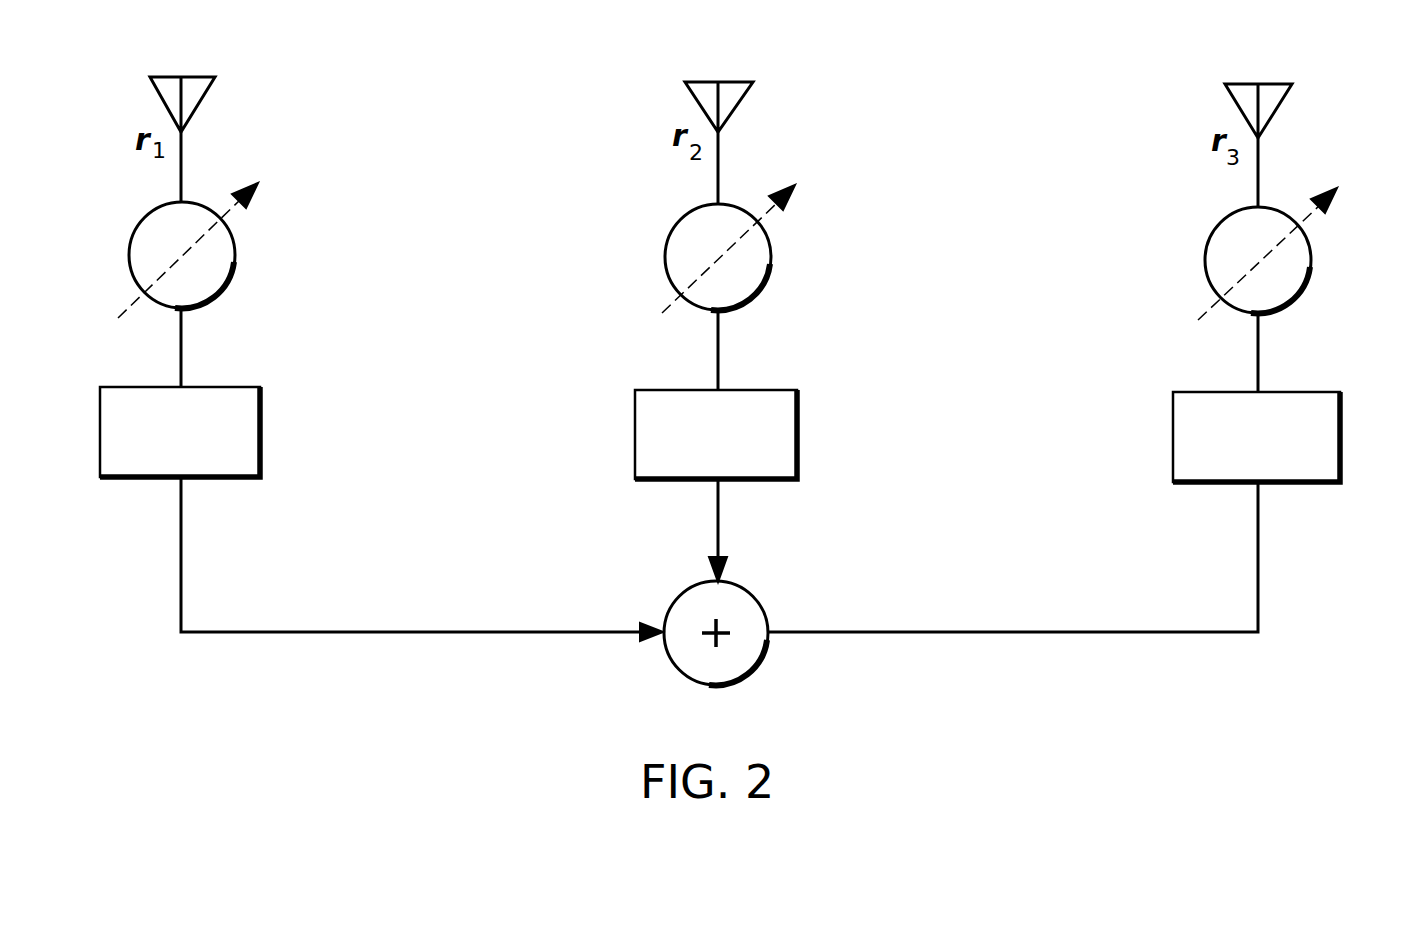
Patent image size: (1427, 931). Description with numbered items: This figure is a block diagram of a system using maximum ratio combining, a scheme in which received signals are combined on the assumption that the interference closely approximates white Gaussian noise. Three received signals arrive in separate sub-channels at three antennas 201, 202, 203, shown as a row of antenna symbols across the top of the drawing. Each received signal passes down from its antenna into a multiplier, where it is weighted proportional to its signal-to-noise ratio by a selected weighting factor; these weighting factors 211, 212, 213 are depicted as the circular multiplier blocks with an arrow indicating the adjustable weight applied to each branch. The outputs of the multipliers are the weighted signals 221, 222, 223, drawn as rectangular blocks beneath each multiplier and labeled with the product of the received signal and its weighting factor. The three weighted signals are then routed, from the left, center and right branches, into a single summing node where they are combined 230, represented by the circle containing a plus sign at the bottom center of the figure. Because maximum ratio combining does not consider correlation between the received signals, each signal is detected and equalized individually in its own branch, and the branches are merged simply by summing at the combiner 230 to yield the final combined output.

The antenna 201 is at (202, 106).
The antenna 202 is at (740, 107).
The antenna 203 is at (1282, 110).
The weighting factor 211 is at (237, 273).
The weighting factor 212 is at (773, 277).
The weighting factor 213 is at (1312, 280).
The weighted signal 221 is at (260, 432).
The weighted signal 222 is at (797, 435).
The weighted signal 223 is at (1340, 437).
The combiner 230 is at (758, 602).